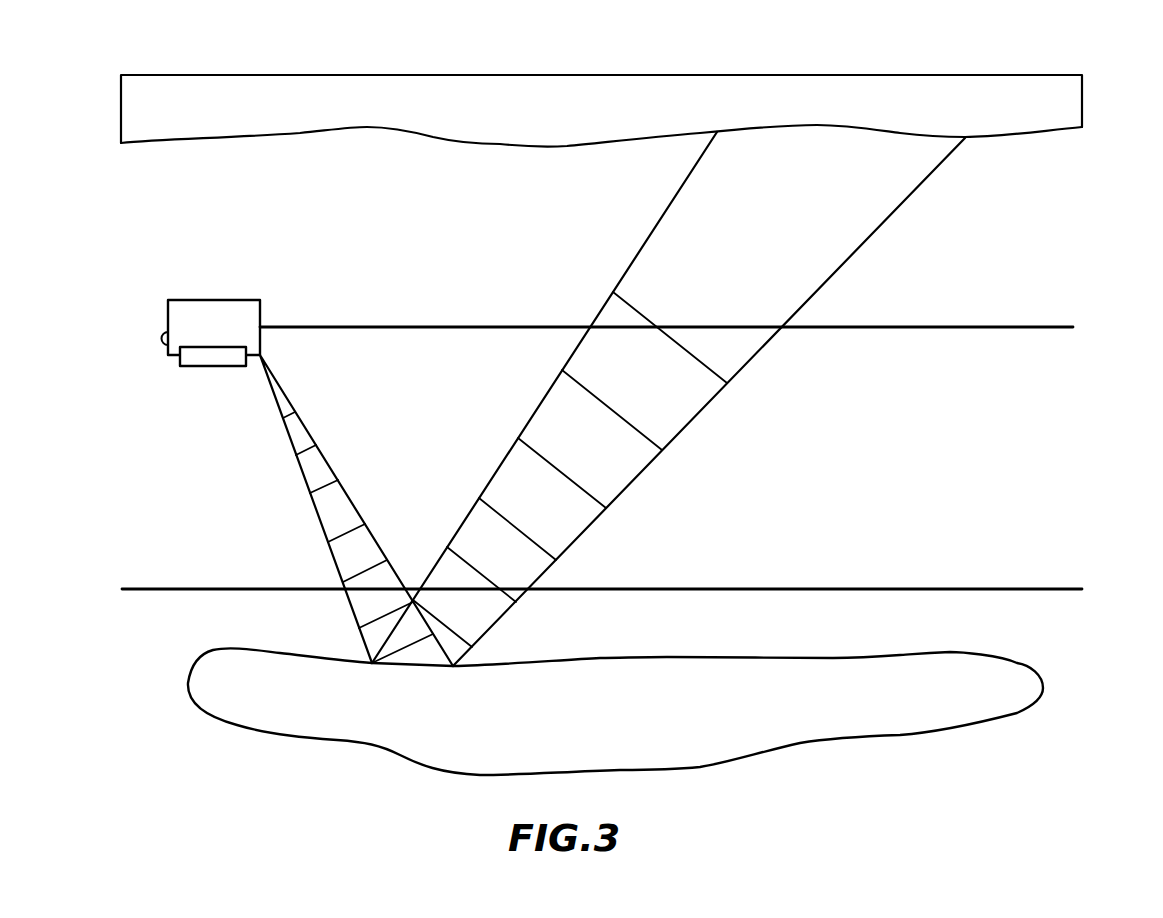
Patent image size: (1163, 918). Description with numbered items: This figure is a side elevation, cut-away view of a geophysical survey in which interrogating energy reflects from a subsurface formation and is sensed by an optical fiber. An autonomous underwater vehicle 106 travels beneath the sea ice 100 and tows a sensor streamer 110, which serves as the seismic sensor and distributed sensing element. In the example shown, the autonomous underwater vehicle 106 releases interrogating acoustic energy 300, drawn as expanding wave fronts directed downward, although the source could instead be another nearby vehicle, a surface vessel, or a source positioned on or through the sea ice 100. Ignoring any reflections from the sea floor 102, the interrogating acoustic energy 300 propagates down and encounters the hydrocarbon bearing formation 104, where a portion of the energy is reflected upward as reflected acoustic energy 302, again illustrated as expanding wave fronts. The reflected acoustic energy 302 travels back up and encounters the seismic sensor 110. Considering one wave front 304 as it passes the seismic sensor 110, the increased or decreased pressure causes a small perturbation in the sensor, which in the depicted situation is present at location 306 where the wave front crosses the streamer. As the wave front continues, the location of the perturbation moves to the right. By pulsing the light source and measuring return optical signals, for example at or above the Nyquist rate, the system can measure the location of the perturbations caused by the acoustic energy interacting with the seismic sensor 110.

The sea ice 100 is at (627, 85).
The sea floor 102 is at (157, 589).
The hydrocarbon bearing formation 104 is at (562, 738).
The autonomous underwater vehicle 106 is at (198, 300).
The sensor streamer 110 is at (1040, 327).
The interrogating acoustic energy 300 is at (318, 525).
The reflected acoustic energy 302 is at (623, 494).
The wave front 304 is at (637, 300).
The location 306 is at (662, 329).